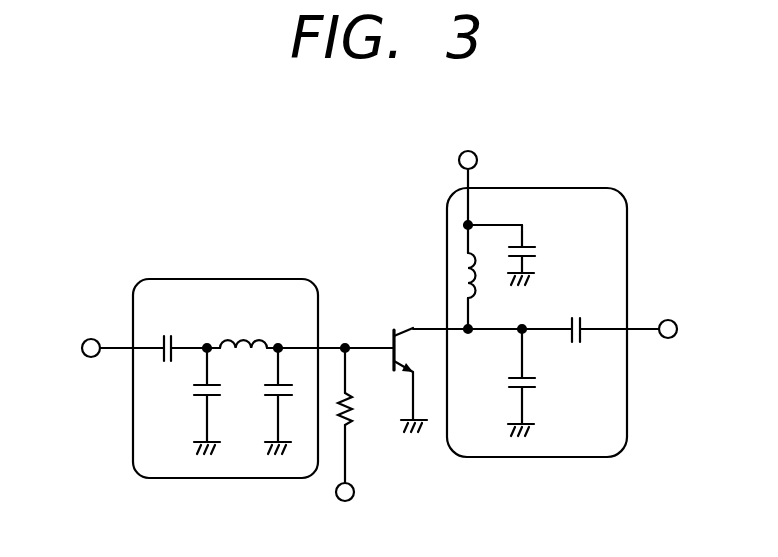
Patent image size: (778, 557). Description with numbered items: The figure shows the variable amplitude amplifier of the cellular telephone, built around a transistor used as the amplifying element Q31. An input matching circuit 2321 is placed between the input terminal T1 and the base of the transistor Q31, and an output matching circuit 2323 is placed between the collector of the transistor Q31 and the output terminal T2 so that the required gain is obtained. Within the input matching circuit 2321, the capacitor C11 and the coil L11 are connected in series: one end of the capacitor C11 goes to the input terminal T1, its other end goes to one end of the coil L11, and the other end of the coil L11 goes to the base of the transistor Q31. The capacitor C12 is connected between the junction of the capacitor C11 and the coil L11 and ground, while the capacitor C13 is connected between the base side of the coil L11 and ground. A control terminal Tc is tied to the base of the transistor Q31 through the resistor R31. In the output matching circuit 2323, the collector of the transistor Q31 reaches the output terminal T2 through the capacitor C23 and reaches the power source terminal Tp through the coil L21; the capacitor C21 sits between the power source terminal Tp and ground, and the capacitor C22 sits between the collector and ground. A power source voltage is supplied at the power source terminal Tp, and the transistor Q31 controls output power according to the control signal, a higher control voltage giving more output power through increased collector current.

The input terminal T1 is at (91, 331).
The output terminal T2 is at (669, 312).
The control terminal Tc is at (344, 510).
The power source terminal Tp is at (466, 143).
The input matching circuit 2321 is at (297, 263).
The output matching circuit 2323 is at (595, 170).
The capacitor C11 is at (168, 337).
The capacitor C12 is at (198, 398).
The capacitor C13 is at (270, 398).
The coil L11 is at (247, 337).
The transistor Q31 is at (407, 328).
The resistor R31 is at (350, 418).
The capacitor C21 is at (540, 248).
The capacitor C22 is at (540, 382).
The capacitor C23 is at (575, 318).
The coil L21 is at (480, 298).